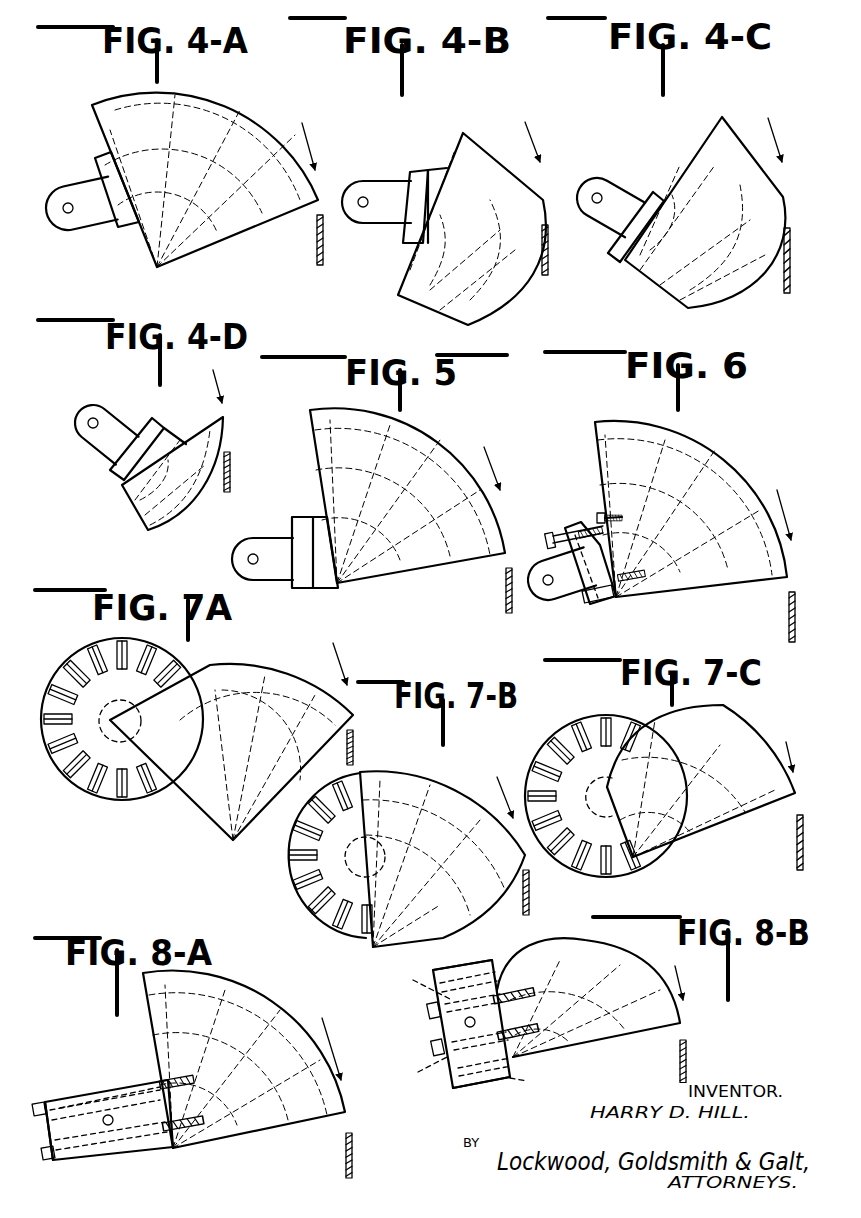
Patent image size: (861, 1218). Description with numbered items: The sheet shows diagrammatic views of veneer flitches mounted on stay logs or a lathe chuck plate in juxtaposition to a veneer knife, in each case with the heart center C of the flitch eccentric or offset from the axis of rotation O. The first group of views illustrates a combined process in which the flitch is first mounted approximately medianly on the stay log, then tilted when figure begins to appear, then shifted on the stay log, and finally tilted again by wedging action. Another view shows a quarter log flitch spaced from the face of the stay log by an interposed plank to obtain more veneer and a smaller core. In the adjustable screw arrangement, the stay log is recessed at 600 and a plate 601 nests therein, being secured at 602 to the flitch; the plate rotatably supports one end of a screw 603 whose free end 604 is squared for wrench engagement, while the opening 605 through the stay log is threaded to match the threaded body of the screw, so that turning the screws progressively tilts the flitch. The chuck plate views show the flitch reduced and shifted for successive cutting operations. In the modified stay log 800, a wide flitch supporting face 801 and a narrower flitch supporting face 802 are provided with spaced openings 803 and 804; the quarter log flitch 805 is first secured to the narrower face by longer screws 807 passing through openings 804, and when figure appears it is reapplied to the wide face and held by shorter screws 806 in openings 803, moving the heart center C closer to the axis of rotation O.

In FIG. 4A, the axis of rotation O is at (68, 214).
In FIG. 4B, the axis of rotation O is at (362, 208).
In FIG. 4C, the axis of rotation O is at (596, 204).
In FIG. 4D, the axis of rotation O is at (92, 429).
In FIG. 5, the axis of rotation O is at (254, 554).
In FIG. 6, the axis of rotation O is at (546, 586).
In FIG. 7A, the axis of rotation O is at (120, 735).
In FIG. 7B, the axis of rotation O is at (365, 860).
In FIG. 7C, the axis of rotation O is at (602, 802).
In FIG. 8A, the axis of rotation O is at (110, 1125).
In FIG. 8B, the axis of rotation O is at (470, 1027).
In FIG. 4A, the heart center C is at (157, 270).
In FIG. 4B, the heart center C is at (398, 298).
In FIG. 4C, the heart center C is at (625, 263).
In FIG. 4D, the heart center C is at (120, 490).
In FIG. 5, the heart center C is at (337, 586).
In FIG. 6, the heart center C is at (618, 599).
In FIG. 7A, the heart center C is at (233, 842).
In FIG. 7B, the heart center C is at (373, 949).
In FIG. 7C, the heart center C is at (640, 862).
In FIG. 8A, the heart center C is at (173, 1150).
In FIG. 8B, the heart center C is at (515, 1058).
In FIG. 6, the recess 600 is at (595, 545).
In FIG. 6, the plate 601 is at (598, 515).
In FIG. 6, the securing means 602 is at (604, 512).
In FIG. 6, the screw 603 is at (575, 536).
In FIG. 6, the free end of screw 604 is at (547, 535).
In FIG. 6, the opening 605 is at (574, 531).
In FIG. 8A, the stay log 800 is at (104, 1152).
In FIG. 8B, the stay log 800 is at (450, 1067).
In FIG. 8A, the wide flitch supporting face 801 is at (62, 1096).
In FIG. 8B, the wide flitch supporting face 801 is at (503, 983).
In FIG. 8A, the narrower flitch supporting face 802 is at (160, 1077).
In FIG. 8B, the narrower flitch supporting face 802 is at (447, 966).
In FIG. 8B, the openings 803 is at (471, 1027).
In FIG. 8A, the openings 804 is at (88, 1095).
In FIG. 8A, the flitch 805 is at (277, 1017).
In FIG. 8B, the flitch 805 is at (599, 1040).
In FIG. 8B, the shorter screws 806 is at (432, 1043).
In FIG. 8A, the longer screws 807 is at (37, 1102).